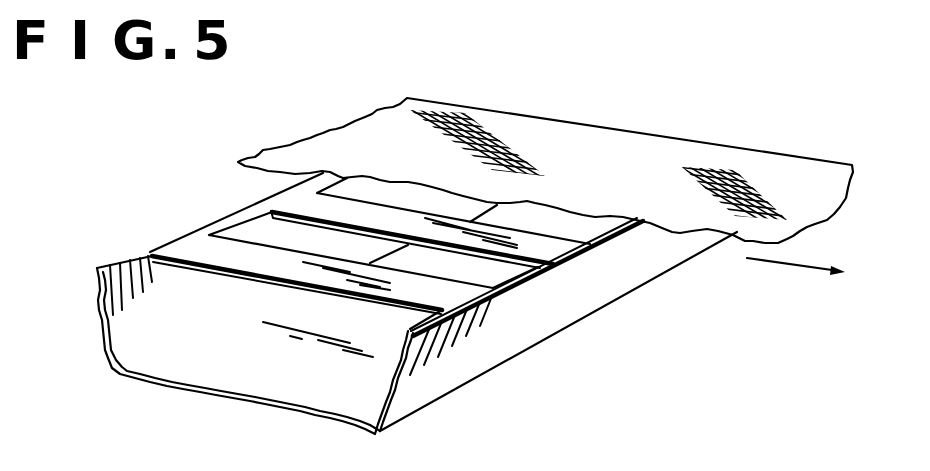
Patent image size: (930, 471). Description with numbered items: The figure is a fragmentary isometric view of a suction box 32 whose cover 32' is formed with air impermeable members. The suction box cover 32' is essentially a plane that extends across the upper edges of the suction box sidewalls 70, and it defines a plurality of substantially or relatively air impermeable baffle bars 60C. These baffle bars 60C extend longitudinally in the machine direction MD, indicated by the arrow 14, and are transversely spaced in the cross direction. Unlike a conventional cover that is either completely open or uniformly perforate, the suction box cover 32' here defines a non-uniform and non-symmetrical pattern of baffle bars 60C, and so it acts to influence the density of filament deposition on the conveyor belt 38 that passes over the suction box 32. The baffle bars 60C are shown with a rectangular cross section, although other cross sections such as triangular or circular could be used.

The web / machine direction arrow 14 is at (782, 319).
The suction box 32 is at (415, 311).
The suction box cover 32' is at (555, 282).
The conveyor belt 38 is at (640, 62).
The baffle bars 60C is at (315, 207).
The suction box sidewalls 70 is at (131, 261).
The machine direction MD is at (782, 294).